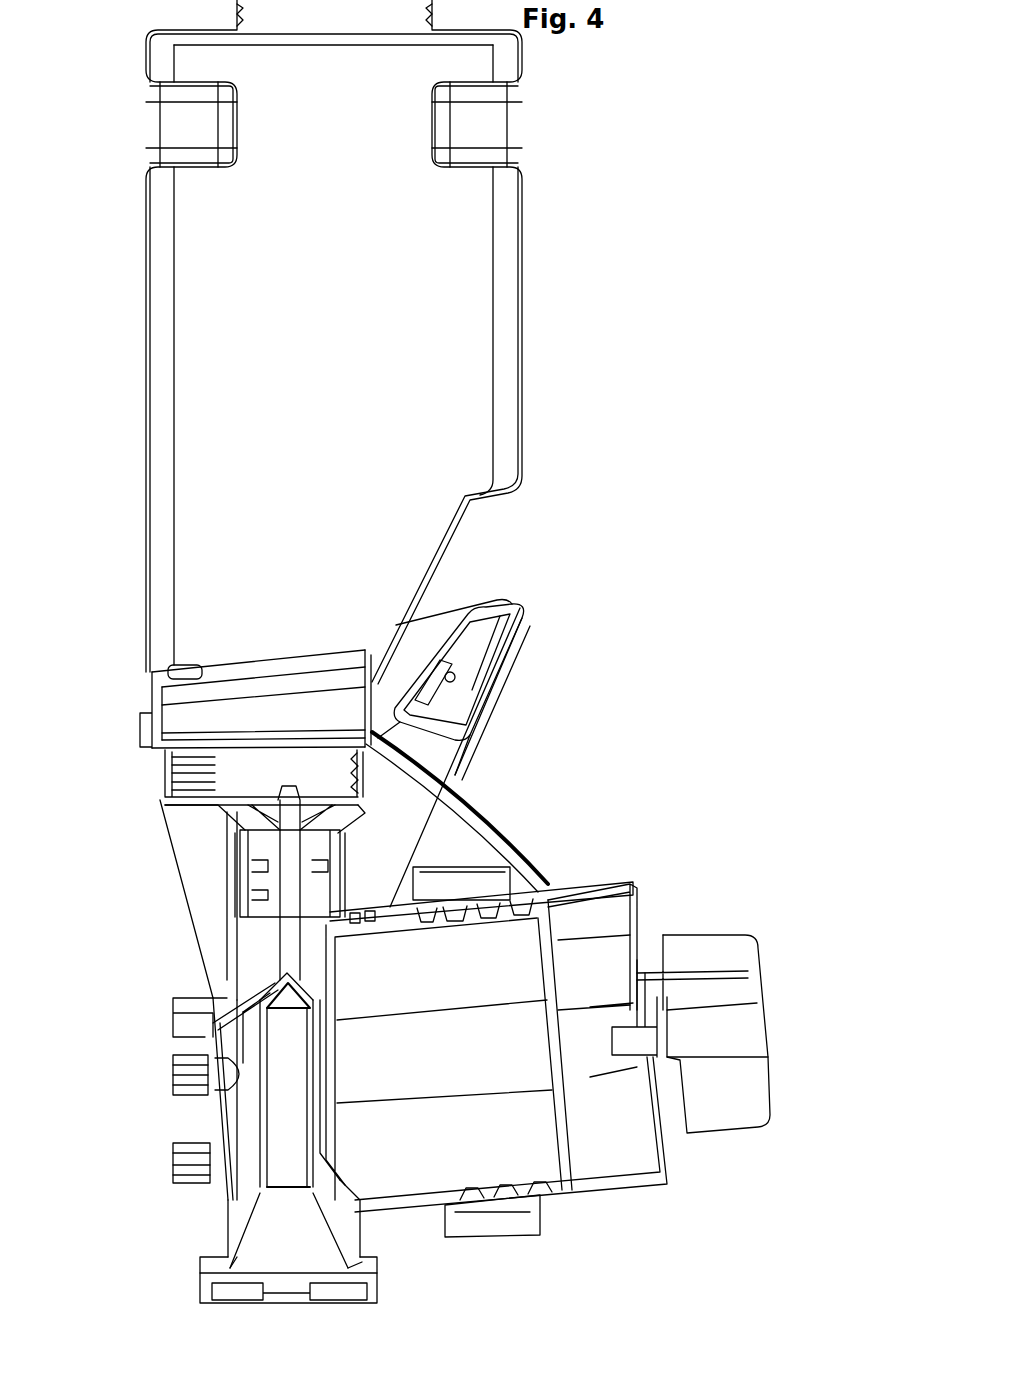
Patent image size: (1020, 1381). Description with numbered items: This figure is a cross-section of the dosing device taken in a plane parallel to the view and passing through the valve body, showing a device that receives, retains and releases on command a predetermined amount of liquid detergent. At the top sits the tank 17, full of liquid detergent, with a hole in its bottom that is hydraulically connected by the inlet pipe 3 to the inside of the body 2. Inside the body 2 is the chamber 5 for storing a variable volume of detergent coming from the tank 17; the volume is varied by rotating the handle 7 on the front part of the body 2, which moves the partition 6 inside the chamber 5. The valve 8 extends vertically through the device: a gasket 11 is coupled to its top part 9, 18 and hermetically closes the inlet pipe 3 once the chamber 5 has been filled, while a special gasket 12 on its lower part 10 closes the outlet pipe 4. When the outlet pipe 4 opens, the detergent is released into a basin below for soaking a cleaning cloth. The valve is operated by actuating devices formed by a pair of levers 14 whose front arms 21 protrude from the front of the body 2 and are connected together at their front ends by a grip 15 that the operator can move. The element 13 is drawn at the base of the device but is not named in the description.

The body 2 is at (413, 1210).
The inlet pipe 3 is at (375, 810).
The outlet pipe 4 is at (207, 1256).
The chamber 5 is at (455, 1065).
The partition 6 is at (535, 1227).
The handle 7 is at (745, 948).
The valve 8 is at (267, 1103).
The top part of the valve 9 is at (288, 942).
The lower part of the valve 10 is at (230, 1240).
The gasket 11 is at (256, 820).
The special gasket 12 is at (370, 1270).
The base 13 is at (205, 1290).
The levers 14 is at (398, 852).
The grip 15 is at (515, 612).
The tank 17 is at (445, 318).
The top part of the valve 18 is at (280, 843).
The front arms 21 is at (465, 720).